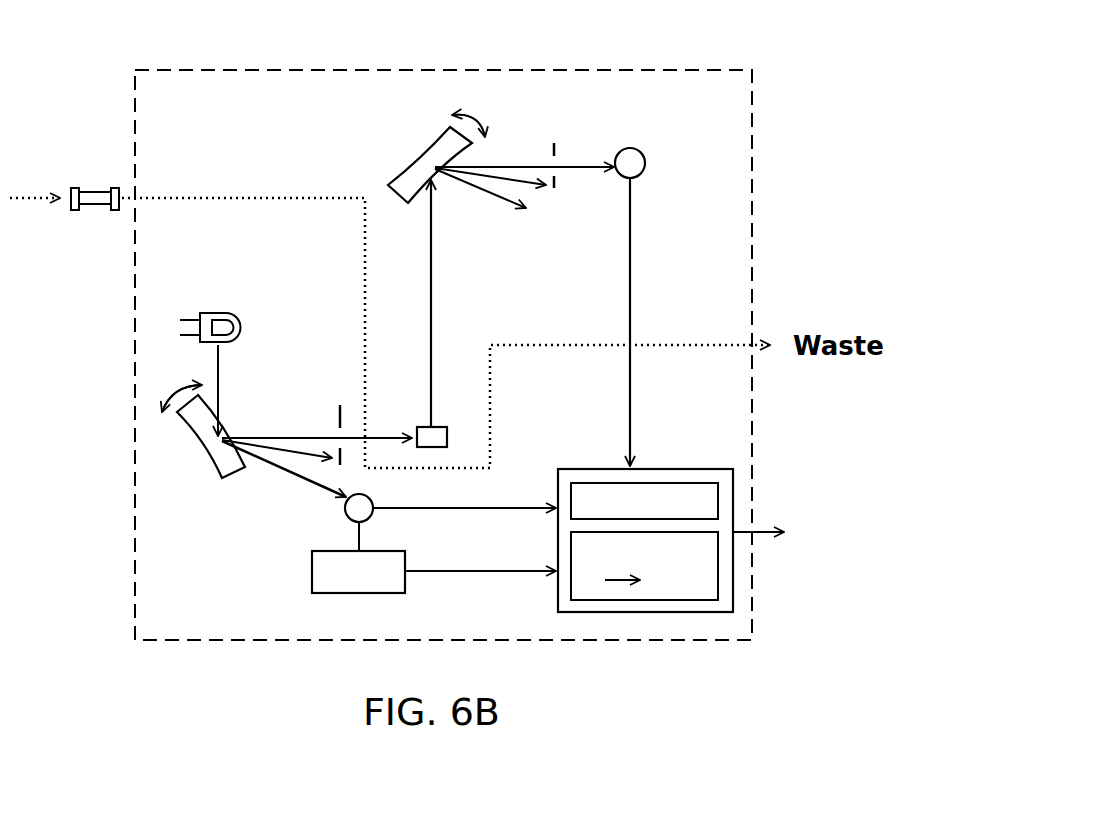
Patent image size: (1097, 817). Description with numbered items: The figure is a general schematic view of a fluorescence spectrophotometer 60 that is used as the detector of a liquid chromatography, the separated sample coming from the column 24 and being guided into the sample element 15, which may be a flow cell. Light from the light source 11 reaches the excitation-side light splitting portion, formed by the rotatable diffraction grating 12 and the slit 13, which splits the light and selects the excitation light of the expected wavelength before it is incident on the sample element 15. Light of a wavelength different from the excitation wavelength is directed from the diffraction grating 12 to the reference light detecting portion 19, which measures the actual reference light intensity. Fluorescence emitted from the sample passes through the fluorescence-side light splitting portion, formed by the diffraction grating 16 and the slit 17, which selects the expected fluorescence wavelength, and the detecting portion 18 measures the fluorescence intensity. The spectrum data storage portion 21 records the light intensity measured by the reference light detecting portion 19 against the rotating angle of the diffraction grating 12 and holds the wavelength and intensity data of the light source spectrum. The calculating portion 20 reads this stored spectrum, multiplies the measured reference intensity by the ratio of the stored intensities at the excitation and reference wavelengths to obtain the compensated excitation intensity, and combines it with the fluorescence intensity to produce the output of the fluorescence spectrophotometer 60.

The fluorescence spectrophotometer 60 is at (712, 68).
The column 24 is at (98, 188).
The light source 11 is at (205, 313).
The diffraction grating 12 is at (210, 470).
The slit 13 is at (340, 405).
The sample element 15 is at (422, 427).
The diffraction grating 16 is at (418, 140).
The slit 17 is at (554, 140).
The detecting portion 18 is at (632, 148).
The reference light detecting portion 19 is at (345, 520).
The calculating portion 20 is at (655, 469).
The spectrum data storage portion 21 is at (312, 578).